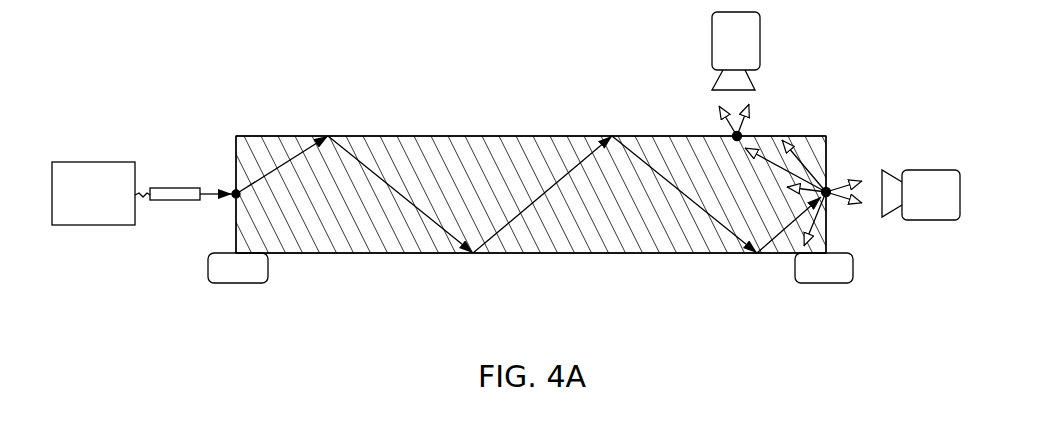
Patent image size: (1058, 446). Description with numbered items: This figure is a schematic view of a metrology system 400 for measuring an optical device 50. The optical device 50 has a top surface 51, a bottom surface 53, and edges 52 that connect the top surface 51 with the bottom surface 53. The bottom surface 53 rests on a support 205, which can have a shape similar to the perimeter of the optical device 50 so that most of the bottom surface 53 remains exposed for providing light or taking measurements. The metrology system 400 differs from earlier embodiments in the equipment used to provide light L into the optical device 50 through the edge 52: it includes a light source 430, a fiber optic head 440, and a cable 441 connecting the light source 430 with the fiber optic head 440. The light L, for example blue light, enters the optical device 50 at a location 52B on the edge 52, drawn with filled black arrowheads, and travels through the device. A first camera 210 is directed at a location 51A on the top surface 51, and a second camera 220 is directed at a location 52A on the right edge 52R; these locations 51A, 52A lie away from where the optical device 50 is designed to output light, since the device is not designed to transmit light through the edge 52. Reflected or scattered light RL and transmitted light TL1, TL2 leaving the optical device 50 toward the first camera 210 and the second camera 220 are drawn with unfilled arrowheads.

The metrology system 400 is at (846, 52).
The light source 430 is at (90, 162).
The cable 441 is at (139, 198).
The fiber optic head 440 is at (172, 201).
The optical device 50 is at (327, 112).
The top surface 51 is at (428, 136).
The edges 52 is at (236, 150).
The bottom surface 53 is at (598, 253).
The location 52B is at (238, 196).
The right edge 52R is at (827, 151).
The location 52A is at (828, 195).
The location 51A is at (741, 134).
The support 205 is at (235, 283).
The first camera 210 is at (720, 52).
The second camera 220 is at (915, 207).
The light L is at (224, 191).
The transmitted light TL1 is at (733, 136).
The transmitted light TL2 is at (829, 189).
The reflected/scattered light RL is at (801, 163).